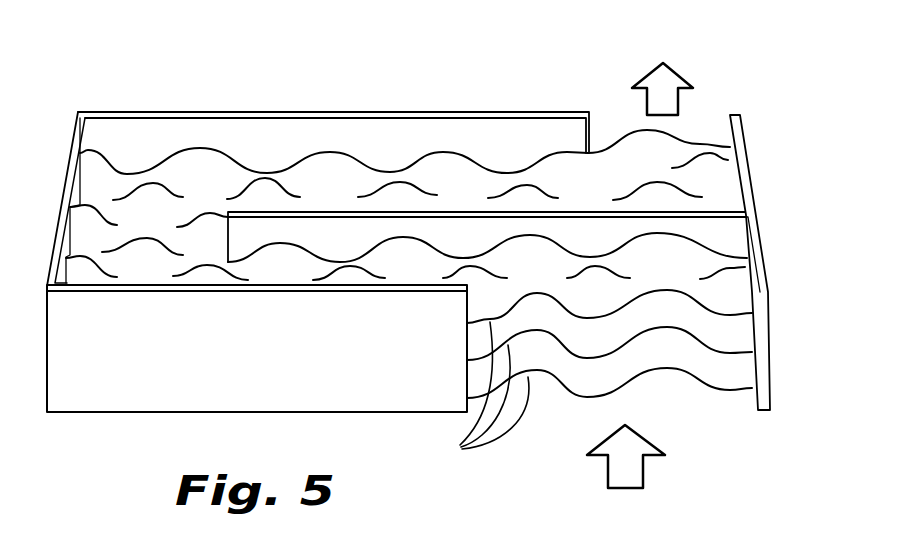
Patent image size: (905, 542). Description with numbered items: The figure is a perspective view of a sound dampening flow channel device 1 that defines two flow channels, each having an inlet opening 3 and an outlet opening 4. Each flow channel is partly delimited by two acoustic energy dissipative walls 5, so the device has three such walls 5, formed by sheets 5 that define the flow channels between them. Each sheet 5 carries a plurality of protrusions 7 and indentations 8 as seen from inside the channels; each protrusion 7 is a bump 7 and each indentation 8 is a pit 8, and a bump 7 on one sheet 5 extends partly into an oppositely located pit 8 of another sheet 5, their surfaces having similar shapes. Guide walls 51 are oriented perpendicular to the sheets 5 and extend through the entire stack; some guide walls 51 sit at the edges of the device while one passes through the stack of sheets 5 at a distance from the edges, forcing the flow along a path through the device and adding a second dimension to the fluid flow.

The sound dampening flow channel device 1 is at (497, 82).
The inlet opening 3 is at (712, 415).
The outlet opening 4 is at (710, 113).
The acoustic energy dissipative wall 5 is at (483, 397).
The protrusion 7 is at (390, 172).
The indentation 8 is at (330, 152).
The guide wall 51 is at (170, 140).